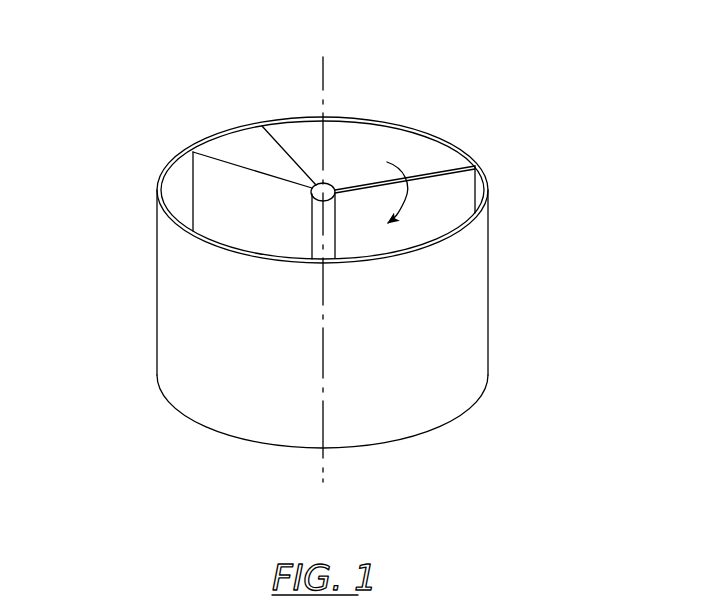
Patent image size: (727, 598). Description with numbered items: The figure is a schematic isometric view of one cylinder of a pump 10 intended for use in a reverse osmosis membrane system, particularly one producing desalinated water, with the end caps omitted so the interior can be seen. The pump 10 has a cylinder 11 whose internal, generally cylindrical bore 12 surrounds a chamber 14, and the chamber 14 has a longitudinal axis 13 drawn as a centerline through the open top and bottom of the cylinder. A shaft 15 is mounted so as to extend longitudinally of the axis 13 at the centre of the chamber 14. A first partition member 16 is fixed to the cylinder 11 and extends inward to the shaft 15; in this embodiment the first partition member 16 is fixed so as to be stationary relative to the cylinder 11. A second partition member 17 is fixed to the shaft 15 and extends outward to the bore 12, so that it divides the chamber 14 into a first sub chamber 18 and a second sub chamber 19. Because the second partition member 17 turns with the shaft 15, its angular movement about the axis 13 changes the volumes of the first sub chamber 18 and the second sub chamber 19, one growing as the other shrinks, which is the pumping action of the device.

The pump 10 is at (353, 252).
The cylinder 11 is at (477, 343).
The internal generally cylindrical bore 12 is at (166, 180).
The longitudinal axis 13 is at (324, 88).
The chamber 14 is at (420, 138).
The shaft 15 is at (332, 233).
The first partition member 16 is at (250, 145).
The second partition member 17 is at (438, 187).
The first sub chamber 18 is at (360, 159).
The second sub chamber 19 is at (267, 226).